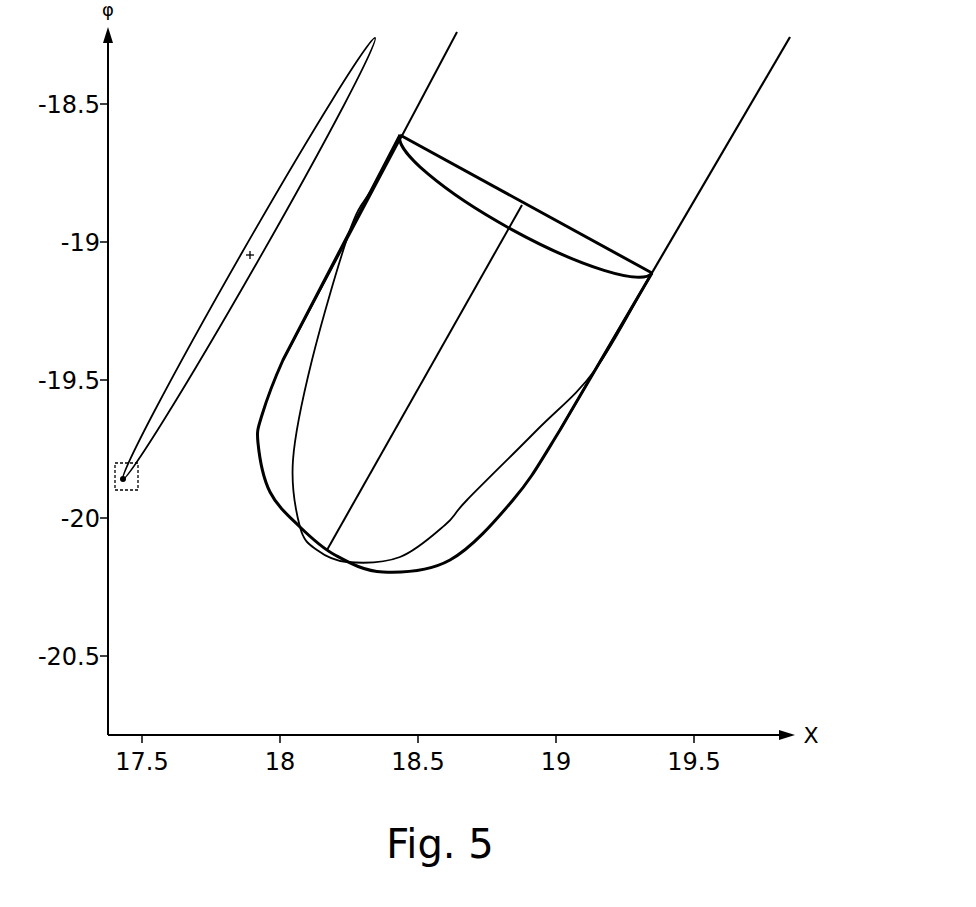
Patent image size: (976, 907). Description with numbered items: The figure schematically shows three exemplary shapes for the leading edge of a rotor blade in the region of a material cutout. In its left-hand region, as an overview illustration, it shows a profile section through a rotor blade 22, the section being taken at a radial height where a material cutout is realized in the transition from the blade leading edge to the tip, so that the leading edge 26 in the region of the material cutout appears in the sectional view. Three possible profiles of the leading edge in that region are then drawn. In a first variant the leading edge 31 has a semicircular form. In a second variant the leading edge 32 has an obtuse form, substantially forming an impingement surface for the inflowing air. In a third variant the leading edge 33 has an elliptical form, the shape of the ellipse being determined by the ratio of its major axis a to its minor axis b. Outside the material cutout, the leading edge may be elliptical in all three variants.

The rotor blade 22 is at (320, 120).
The leading edge 26 is at (136, 490).
The leading edge 31 is at (387, 572).
The leading edge 32 is at (545, 252).
The leading edge 33 is at (445, 525).
The major axis a is at (430, 375).
The minor axis b is at (455, 162).